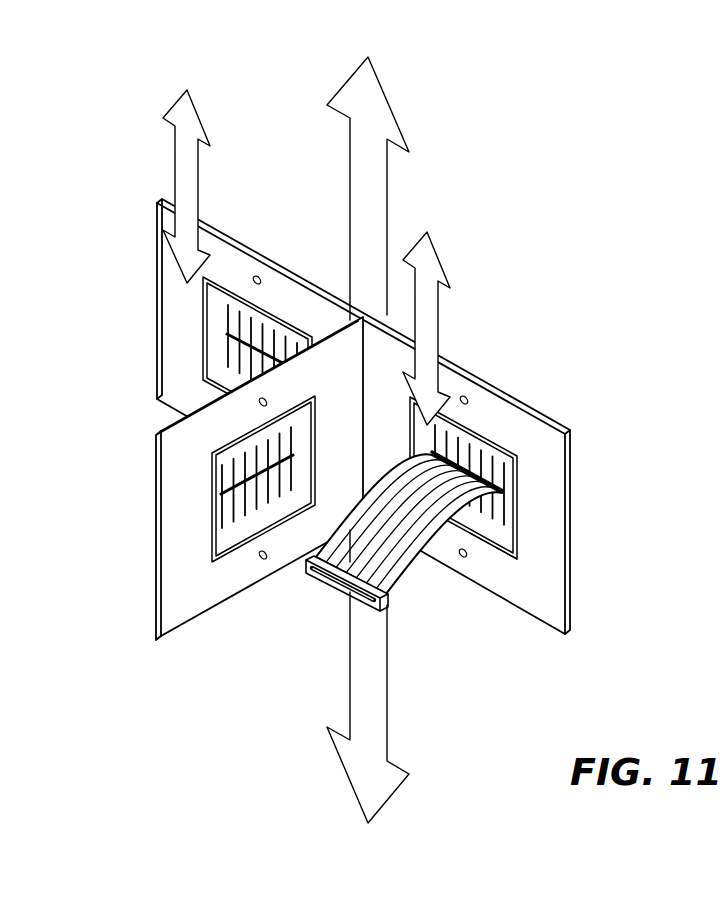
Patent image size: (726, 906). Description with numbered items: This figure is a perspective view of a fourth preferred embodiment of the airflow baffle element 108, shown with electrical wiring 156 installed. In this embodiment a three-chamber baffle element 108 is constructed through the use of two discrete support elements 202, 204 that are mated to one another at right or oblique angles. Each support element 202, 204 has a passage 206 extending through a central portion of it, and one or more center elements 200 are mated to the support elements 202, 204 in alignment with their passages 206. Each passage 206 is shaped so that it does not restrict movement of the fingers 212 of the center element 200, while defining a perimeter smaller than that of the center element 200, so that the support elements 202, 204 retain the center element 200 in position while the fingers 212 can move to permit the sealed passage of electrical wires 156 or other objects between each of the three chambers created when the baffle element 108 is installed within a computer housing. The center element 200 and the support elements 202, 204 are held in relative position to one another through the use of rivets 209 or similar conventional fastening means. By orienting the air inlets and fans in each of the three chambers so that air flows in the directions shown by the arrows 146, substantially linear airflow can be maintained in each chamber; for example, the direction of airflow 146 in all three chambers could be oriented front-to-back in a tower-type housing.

The baffle element 108 is at (367, 392).
The direction of airflow 146 is at (198, 110).
The ribbon cable with connector 156 is at (418, 575).
The center element 200 is at (220, 320).
The support element 202 is at (566, 436).
The support element 204 is at (289, 548).
The passage 206 is at (511, 541).
The rivet 209 is at (256, 276).
The finger 212 is at (278, 337).